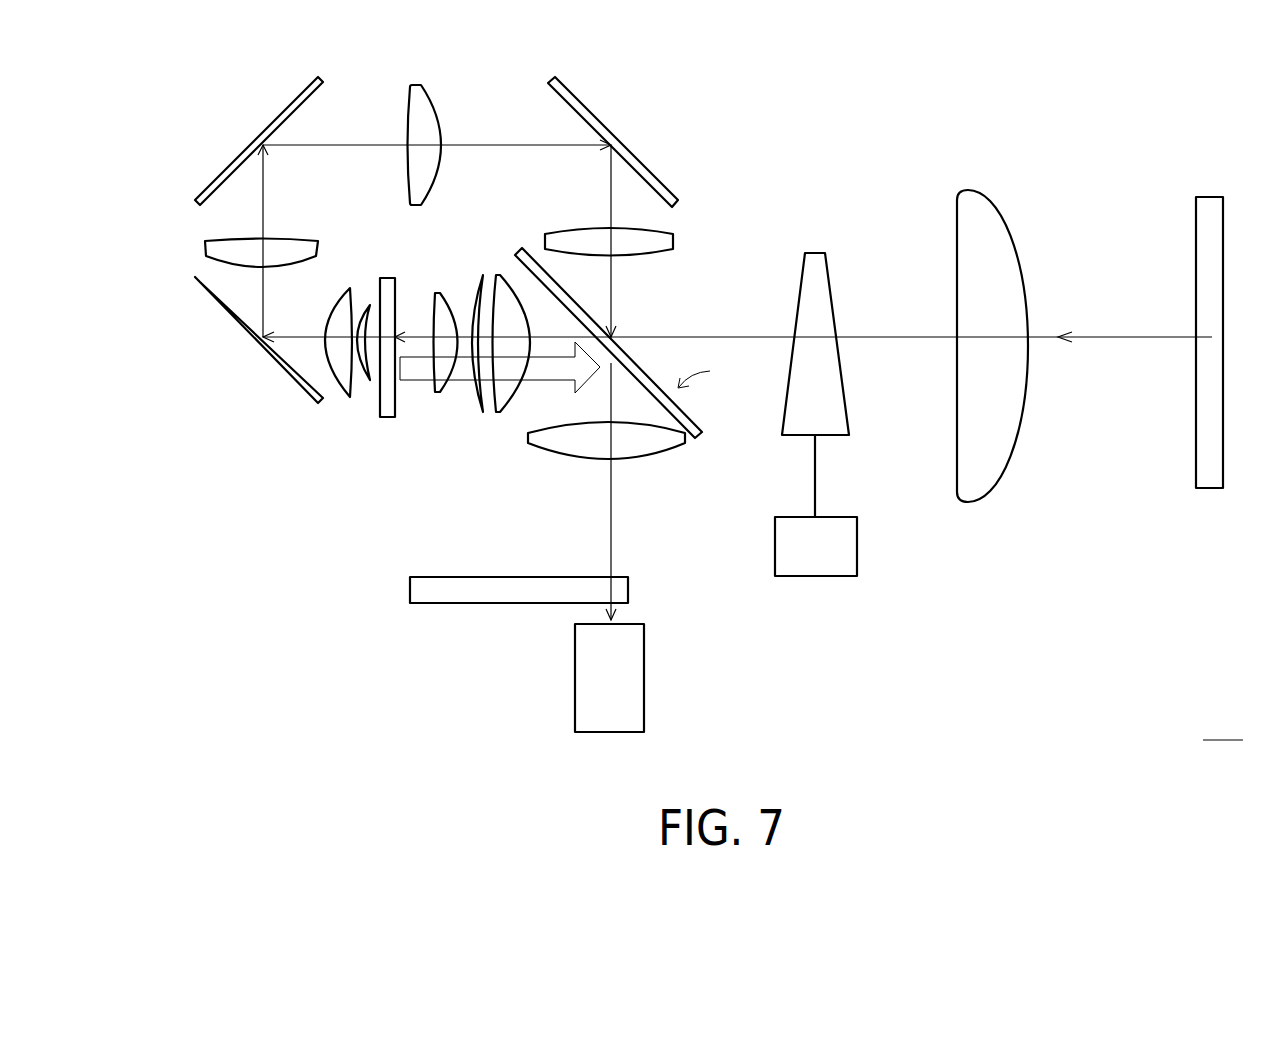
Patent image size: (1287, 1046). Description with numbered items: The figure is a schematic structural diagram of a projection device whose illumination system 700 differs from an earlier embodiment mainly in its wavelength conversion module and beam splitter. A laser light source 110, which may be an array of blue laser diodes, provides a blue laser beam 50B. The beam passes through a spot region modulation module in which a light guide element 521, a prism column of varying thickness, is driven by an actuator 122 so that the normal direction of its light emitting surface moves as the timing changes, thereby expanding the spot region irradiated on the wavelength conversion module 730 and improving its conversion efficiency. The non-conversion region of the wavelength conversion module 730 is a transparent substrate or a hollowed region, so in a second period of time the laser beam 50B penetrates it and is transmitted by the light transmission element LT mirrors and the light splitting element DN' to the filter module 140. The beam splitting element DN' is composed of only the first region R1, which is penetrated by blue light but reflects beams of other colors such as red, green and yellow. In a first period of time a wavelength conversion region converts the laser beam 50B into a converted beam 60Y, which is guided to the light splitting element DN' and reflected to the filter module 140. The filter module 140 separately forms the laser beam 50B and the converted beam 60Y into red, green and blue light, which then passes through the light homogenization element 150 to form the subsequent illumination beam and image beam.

The illumination system 700 is at (1223, 725).
The laser light source 110 is at (1211, 200).
The laser beam 50B is at (1126, 340).
The light guide element 521 is at (815, 259).
The actuator 122 is at (857, 547).
The wavelength conversion module 730 is at (390, 418).
The converted beam 60Y is at (427, 381).
The light transmission element LT is at (212, 188).
The first region R1 is at (698, 436).
The beam splitting element DN' is at (714, 368).
The filter module 140 is at (412, 592).
The light homogenization element 150 is at (645, 684).